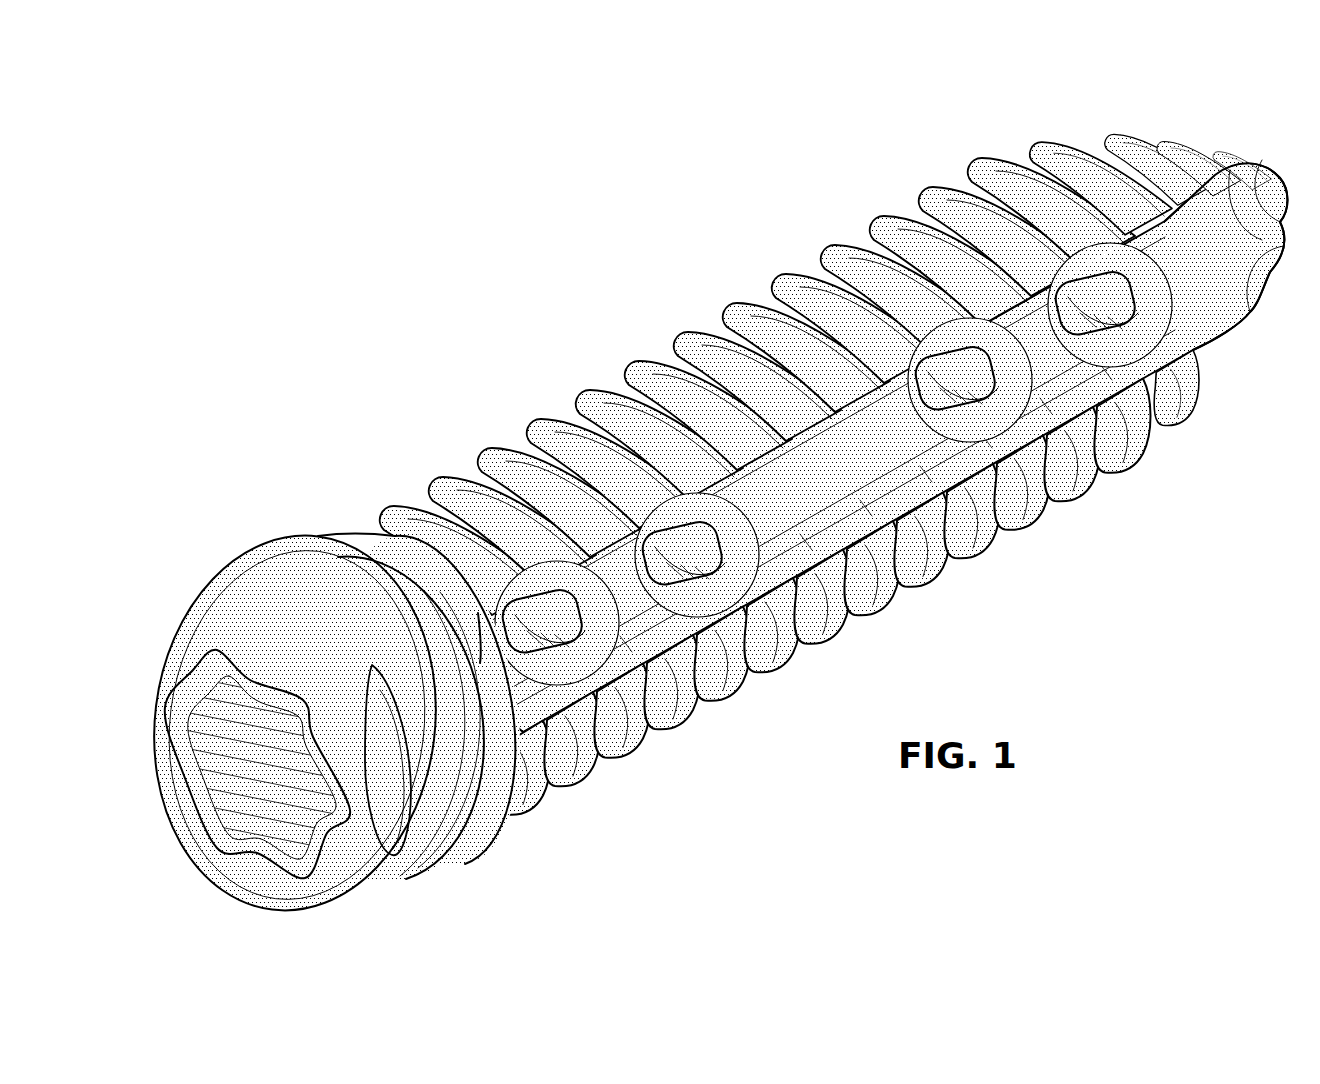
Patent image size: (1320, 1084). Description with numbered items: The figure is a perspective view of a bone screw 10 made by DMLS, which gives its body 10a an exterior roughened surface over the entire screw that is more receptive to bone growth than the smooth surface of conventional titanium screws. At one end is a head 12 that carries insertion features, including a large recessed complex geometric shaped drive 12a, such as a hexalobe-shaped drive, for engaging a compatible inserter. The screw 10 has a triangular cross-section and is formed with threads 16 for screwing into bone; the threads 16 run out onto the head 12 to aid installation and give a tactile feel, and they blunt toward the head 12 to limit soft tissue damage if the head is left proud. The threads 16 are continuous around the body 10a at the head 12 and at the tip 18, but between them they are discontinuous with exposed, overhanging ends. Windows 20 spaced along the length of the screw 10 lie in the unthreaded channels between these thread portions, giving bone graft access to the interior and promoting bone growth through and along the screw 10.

The bone screw 10 is at (703, 505).
The body 10a is at (510, 535).
The head 12 is at (326, 675).
The drive 12a is at (232, 767).
The threads 16 is at (980, 177).
The tip 18 is at (1247, 153).
The windows 20 is at (1112, 292).